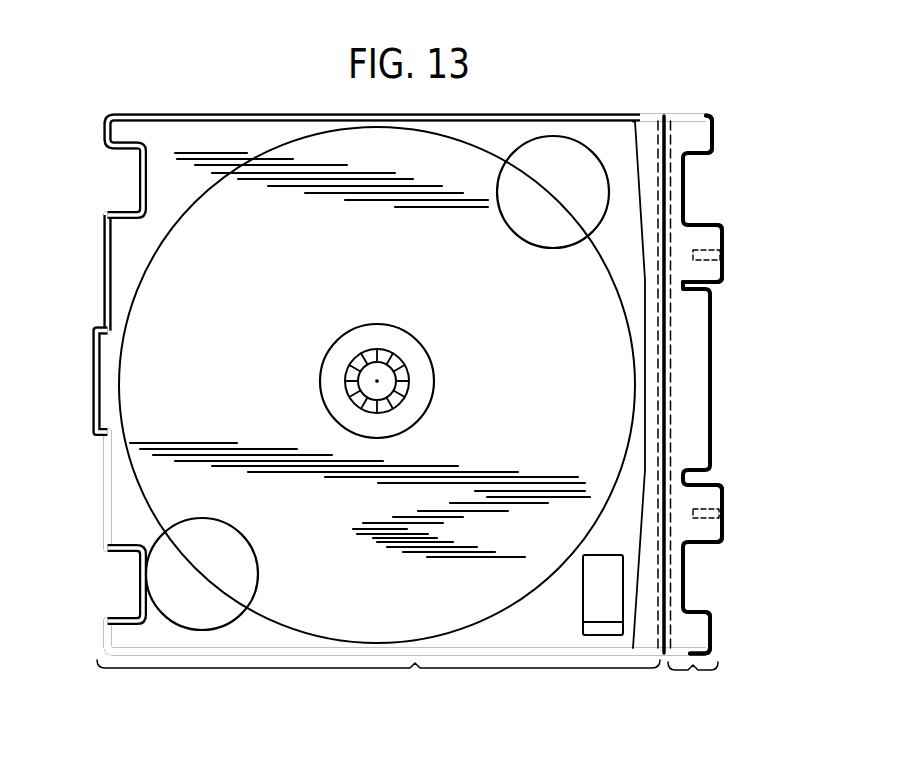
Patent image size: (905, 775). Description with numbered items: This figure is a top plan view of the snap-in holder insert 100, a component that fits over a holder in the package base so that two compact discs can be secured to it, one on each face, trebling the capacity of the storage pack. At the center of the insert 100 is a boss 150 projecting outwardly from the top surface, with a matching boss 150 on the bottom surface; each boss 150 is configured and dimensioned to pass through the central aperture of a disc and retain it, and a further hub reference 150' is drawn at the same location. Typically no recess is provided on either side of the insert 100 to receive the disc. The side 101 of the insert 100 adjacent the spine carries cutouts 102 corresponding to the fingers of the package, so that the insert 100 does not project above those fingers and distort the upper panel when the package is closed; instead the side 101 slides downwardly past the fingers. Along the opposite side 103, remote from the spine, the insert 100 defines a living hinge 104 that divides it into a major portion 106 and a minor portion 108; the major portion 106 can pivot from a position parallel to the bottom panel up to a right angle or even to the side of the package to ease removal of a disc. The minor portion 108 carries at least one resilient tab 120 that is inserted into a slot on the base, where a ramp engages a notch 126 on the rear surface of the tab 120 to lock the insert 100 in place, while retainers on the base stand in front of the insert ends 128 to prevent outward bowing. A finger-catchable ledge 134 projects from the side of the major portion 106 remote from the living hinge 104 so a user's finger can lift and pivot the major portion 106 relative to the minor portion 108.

The snap-in holder insert 100 is at (117, 106).
The side of the insert adjacent the spine 101 is at (103, 266).
The cutouts 102 is at (142, 178).
The side of the insert remote from the spine 103 is at (684, 197).
The living hinge 104 is at (667, 113).
The major portion 106 is at (181, 135).
The minor portion 108 is at (688, 113).
The resilient tab 120 is at (723, 262).
The notch 126 is at (722, 254).
The insert ends 128 is at (700, 138).
The finger-catchable ledge 134 is at (93, 365).
The boss 150 is at (343, 381).
The hub gripping teeth 150' is at (334, 384).